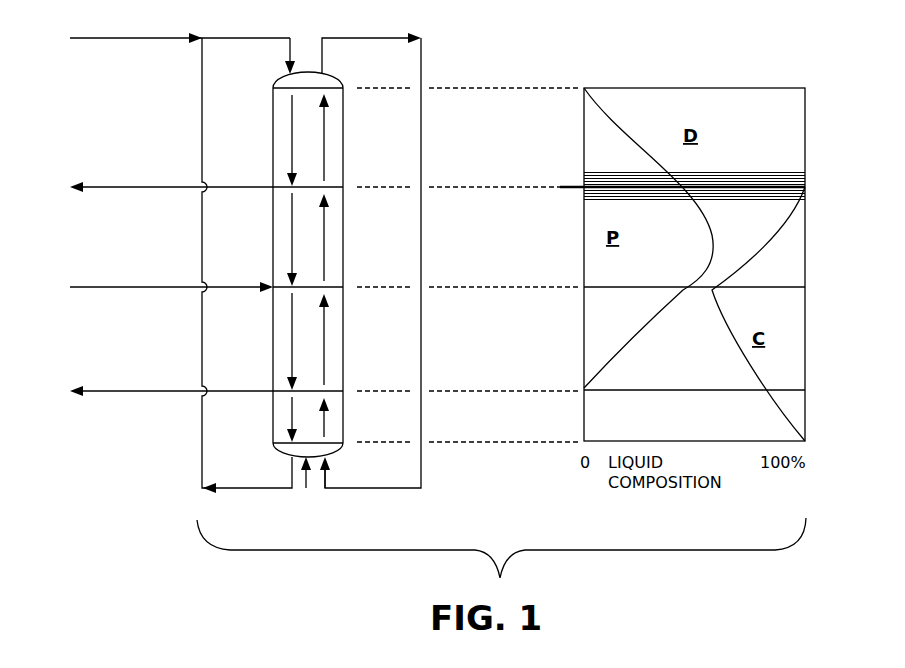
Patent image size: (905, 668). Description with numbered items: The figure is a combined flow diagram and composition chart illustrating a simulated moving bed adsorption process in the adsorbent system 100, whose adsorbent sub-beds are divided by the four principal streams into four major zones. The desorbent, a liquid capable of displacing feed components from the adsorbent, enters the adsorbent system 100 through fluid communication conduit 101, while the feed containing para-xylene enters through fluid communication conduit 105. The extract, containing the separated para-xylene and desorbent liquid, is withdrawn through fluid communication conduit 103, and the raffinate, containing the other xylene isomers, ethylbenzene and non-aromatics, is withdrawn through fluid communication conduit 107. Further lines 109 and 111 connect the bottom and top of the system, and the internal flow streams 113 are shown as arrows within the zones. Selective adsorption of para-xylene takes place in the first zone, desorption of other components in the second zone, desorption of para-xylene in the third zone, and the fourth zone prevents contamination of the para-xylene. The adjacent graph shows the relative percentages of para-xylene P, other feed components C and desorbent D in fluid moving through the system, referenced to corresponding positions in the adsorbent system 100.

The adsorbent system 100 is at (306, 488).
The fluid communication conduit 101 is at (127, 40).
The fluid communication conduit 103 is at (127, 189).
The fluid communication conduit 105 is at (127, 289).
The fluid communication conduit 107 is at (127, 393).
The bottoms recycle line 109 is at (201, 455).
The overhead recycle line 111 is at (422, 72).
The internal vapor and liquid flow streams 113 is at (292, 330).